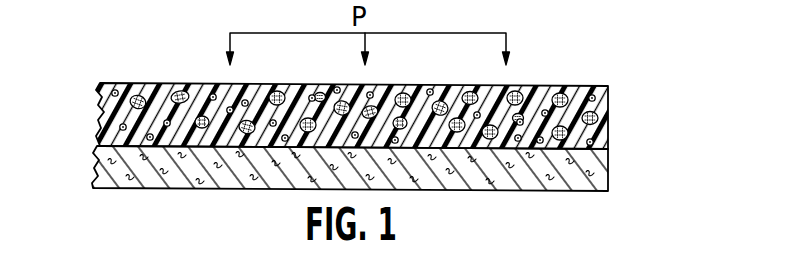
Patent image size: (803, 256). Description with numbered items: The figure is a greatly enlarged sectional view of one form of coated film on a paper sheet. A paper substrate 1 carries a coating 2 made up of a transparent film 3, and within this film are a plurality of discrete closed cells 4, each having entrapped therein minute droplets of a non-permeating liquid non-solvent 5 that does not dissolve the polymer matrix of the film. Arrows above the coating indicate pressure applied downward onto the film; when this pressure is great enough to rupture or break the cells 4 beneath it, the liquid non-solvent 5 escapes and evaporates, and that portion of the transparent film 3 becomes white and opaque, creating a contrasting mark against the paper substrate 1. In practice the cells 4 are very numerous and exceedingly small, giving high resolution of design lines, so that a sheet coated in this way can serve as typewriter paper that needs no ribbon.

The paper substrate 1 is at (107, 163).
The coating 2 is at (628, 120).
The transparent film 3 is at (107, 99).
The cells 4 is at (187, 89).
The non-permeating liquid non-solvent 5 is at (166, 90).